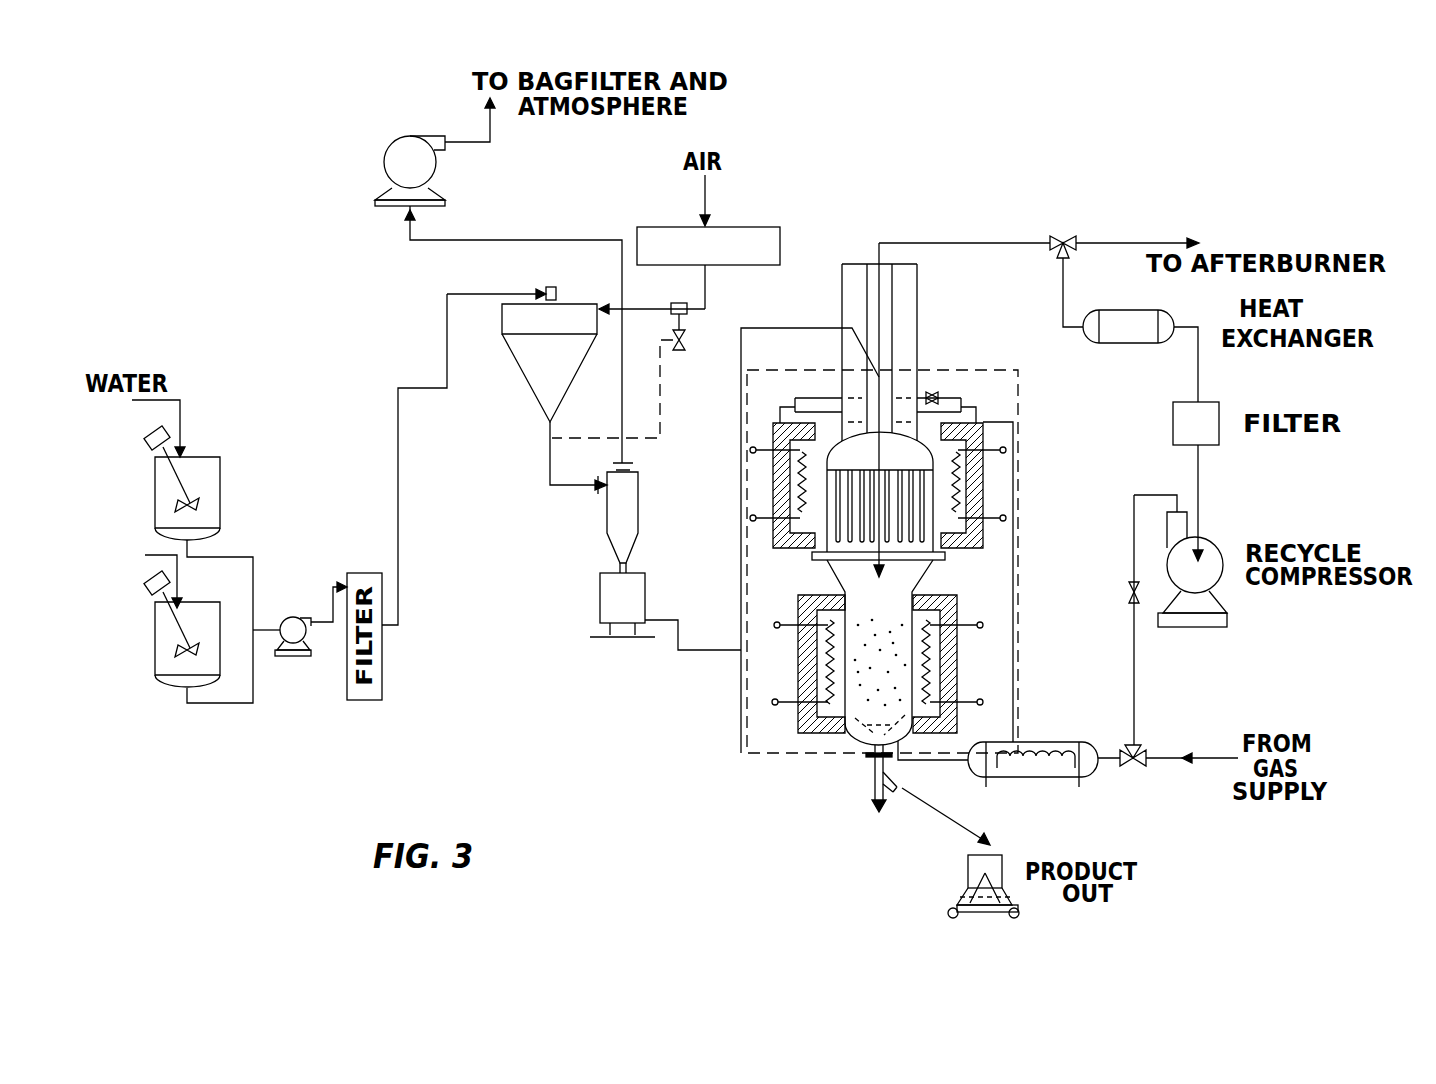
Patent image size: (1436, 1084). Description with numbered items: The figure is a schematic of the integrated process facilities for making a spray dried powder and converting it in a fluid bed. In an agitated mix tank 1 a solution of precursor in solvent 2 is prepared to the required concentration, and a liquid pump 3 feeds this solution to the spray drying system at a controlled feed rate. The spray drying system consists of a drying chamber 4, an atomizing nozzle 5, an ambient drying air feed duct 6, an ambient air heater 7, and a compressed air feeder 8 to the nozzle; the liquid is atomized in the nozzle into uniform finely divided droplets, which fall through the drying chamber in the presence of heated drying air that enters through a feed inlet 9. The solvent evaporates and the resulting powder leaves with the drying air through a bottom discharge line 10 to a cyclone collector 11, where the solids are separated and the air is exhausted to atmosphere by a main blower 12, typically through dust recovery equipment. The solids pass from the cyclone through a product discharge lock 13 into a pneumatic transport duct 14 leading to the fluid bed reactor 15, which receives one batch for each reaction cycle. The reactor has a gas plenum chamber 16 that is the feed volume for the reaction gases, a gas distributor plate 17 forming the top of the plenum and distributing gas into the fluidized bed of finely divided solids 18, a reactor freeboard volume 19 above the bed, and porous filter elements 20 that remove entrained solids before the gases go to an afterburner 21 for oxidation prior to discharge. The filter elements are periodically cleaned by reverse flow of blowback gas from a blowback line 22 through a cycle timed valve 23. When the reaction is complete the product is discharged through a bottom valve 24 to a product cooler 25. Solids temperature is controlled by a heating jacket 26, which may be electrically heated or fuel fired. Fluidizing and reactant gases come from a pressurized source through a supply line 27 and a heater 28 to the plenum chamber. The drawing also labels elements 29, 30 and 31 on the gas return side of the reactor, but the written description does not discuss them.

The agitated mix tank 1 is at (153, 503).
The solution of precursor in solvent 2 is at (203, 485).
The liquid pump 3 is at (290, 656).
The drying chamber 4 is at (527, 353).
The atomizing nozzle 5 is at (557, 301).
The ambient drying air feed duct 6 is at (707, 224).
The ambient air heater 7 is at (688, 313).
The compressed air feeder 8 is at (552, 287).
The feed inlet 9 is at (652, 299).
The bottom discharge line 10 is at (548, 462).
The cyclone collector 11 is at (615, 510).
The main blower 12 is at (410, 147).
The product discharge lock 13 is at (628, 565).
The pneumatic transport duct 14 is at (703, 648).
The fluid bed reactor 15 is at (1017, 493).
The gas plenum chamber 16 is at (868, 743).
The gas distributor plate 17 is at (938, 687).
The fluidized bed of finely divided solids 18 is at (887, 667).
The reactor freeboard volume 19 is at (895, 582).
The porous filter elements 20 is at (825, 503).
The afterburner 21 is at (1039, 268).
The blowback line 22 is at (957, 397).
The cycle timed valve 23 is at (935, 393).
The bottom valve 24 is at (870, 783).
The product cooler 25 is at (963, 873).
The heating jacket 26 is at (795, 668).
The supply line 27 is at (1165, 762).
The heater 28 is at (1058, 745).
The heat exchanger 29 is at (1141, 332).
The filter 30 is at (1183, 420).
The recycle compressor 31 is at (1210, 558).